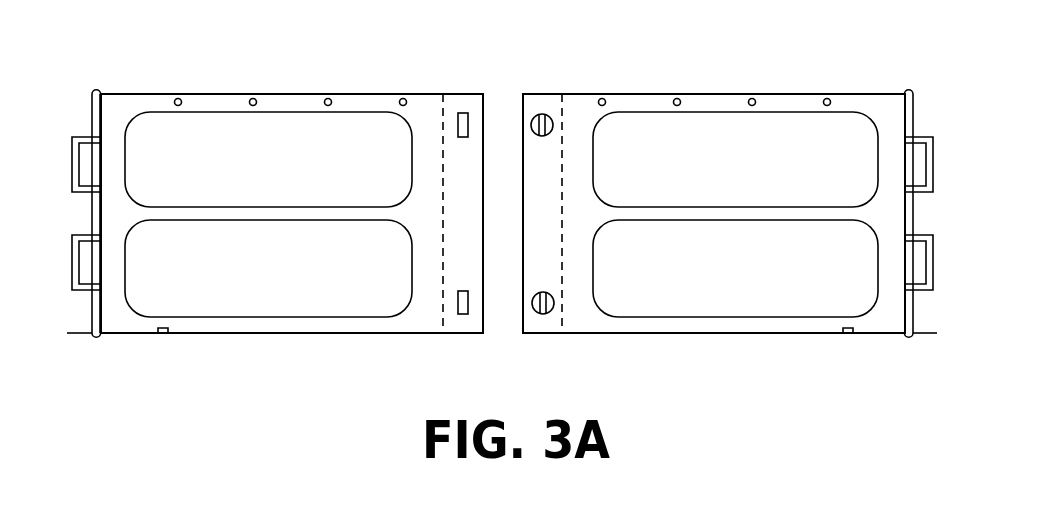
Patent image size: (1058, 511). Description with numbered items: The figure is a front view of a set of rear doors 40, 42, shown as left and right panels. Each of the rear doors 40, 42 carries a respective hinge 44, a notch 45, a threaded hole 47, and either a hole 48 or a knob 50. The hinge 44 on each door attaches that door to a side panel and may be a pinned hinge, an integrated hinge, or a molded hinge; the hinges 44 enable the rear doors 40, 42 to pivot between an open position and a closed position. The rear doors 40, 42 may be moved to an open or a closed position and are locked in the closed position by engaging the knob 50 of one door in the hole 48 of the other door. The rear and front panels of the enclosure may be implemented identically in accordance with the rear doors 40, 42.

The rear door 40 is at (245, 75).
The rear door 42 is at (698, 75).
The hinge 44 is at (68, 110).
The notch 45 is at (161, 334).
The threaded hole 47 is at (403, 98).
The hole 48 is at (463, 315).
The knob 50 is at (543, 314).